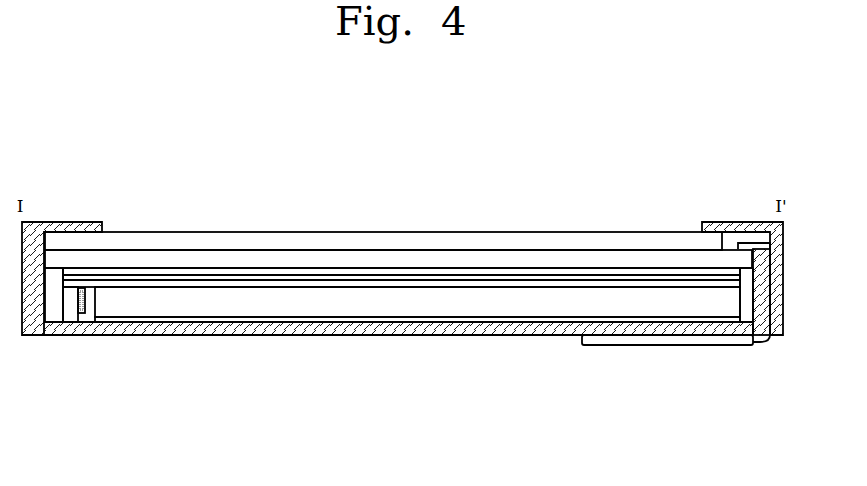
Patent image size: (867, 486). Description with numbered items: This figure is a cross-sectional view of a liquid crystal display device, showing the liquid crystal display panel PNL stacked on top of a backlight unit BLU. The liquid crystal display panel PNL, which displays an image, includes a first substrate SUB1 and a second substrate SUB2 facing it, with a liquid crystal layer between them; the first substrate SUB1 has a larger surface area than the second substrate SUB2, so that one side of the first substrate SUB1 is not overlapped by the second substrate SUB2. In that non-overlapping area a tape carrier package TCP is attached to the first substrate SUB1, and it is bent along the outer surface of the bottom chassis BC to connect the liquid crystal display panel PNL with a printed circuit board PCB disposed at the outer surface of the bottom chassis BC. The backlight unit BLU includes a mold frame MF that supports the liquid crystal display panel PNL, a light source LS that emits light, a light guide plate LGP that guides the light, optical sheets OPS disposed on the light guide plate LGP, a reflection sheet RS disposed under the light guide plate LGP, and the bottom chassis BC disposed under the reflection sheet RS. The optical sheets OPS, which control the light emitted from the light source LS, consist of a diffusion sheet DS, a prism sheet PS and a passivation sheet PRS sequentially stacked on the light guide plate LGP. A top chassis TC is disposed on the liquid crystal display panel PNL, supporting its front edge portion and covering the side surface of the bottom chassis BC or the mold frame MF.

The top chassis TC is at (53, 222).
The liquid crystal display panel PNL is at (398, 202).
The second substrate SUB2 is at (312, 240).
The first substrate SUB1 is at (300, 163).
The optical sheets OPS is at (401, 212).
The passivation sheet PRS is at (463, 272).
The prism sheet PS is at (500, 278).
The diffusion sheet DS is at (463, 163).
The backlight unit BLU is at (393, 354).
The mold frame MF is at (53, 318).
The light source LS is at (73, 318).
The light guide plate LGP is at (135, 305).
The reflection sheet RS is at (203, 320).
The bottom chassis BC is at (33, 398).
The printed circuit board PCB is at (638, 340).
The tape carrier package TCP is at (760, 342).